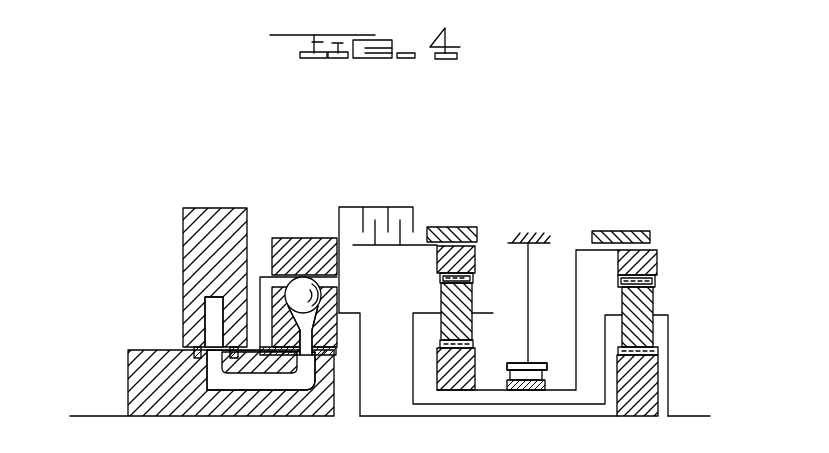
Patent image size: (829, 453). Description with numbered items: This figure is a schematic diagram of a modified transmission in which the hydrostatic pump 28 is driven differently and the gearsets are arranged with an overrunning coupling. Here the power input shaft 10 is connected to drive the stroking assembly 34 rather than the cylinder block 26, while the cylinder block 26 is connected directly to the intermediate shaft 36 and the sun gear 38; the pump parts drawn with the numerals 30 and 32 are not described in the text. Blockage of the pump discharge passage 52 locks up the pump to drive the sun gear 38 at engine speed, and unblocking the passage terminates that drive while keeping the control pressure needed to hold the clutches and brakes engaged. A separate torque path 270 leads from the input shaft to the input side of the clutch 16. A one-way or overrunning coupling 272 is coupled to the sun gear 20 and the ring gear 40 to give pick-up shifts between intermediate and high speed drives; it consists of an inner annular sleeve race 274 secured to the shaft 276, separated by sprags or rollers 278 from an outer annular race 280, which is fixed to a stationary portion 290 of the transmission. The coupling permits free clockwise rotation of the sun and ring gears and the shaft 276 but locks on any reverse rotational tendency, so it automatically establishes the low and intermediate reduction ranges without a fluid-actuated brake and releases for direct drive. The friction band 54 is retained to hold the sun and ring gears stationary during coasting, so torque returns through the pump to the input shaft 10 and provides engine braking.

The power input shaft 10 is at (98, 416).
The clutch 16 is at (392, 207).
The sun gear 20 is at (437, 374).
The cylinder block 26 is at (336, 302).
The hydrostatic pump 28 is at (311, 230).
The block 30 is at (322, 263).
The channel 32 is at (278, 400).
The stroking assembly 34 is at (208, 414).
The intermediate shaft 36 is at (492, 417).
The sun gear 38 is at (638, 406).
The ring gear 40 is at (647, 266).
The pump discharge passage 52 is at (298, 383).
The friction band 54 is at (635, 233).
The torque path 270 is at (254, 283).
The one-way coupling 272 is at (540, 361).
The inner annular sleeve race 274 is at (530, 389).
The shaft 276 is at (480, 391).
The sprags or rollers 278 is at (505, 381).
The outer annular race 280 is at (512, 362).
The stationary portion 290 is at (529, 236).